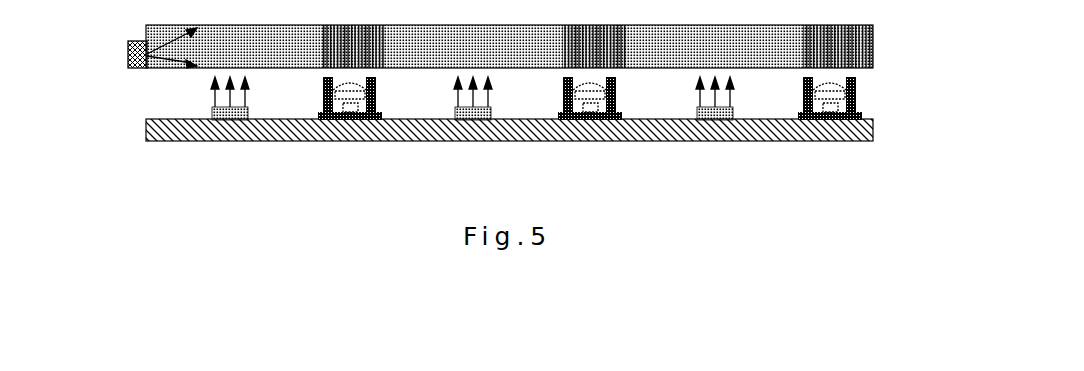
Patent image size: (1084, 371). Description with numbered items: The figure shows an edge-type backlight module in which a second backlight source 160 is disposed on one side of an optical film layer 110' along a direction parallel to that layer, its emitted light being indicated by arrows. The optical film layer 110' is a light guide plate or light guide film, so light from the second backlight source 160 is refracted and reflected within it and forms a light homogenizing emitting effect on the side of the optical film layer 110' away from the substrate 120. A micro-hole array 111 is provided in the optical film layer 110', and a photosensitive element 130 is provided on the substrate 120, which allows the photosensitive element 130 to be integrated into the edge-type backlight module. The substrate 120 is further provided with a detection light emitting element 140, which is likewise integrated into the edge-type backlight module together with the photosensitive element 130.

The optical film layer 110' is at (459, 64).
The micro-hole array 111 is at (640, 45).
The substrate 120 is at (146, 134).
The photosensitive element 130 is at (346, 120).
The detection light emitting element 140 is at (231, 120).
The second backlight source 160 is at (128, 52).